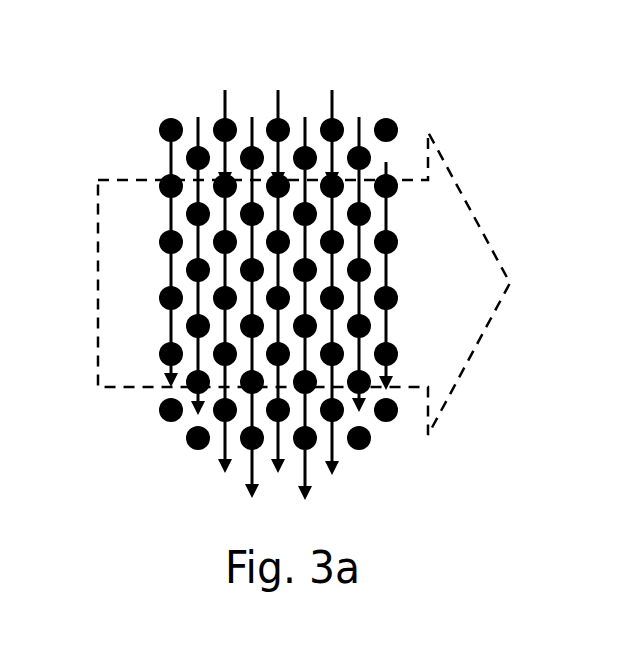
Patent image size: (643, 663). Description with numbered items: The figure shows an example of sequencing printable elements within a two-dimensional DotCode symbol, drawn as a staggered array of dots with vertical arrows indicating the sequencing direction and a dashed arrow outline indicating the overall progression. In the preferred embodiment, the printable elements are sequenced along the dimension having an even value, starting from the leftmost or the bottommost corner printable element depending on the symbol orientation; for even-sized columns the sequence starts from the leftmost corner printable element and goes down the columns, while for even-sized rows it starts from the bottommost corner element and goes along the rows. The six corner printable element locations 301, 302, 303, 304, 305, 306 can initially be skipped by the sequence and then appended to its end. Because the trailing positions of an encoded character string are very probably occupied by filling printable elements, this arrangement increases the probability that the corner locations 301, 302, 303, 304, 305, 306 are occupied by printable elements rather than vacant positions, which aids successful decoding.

The corner printable element location 301 is at (397, 423).
The corner printable element location 302 is at (157, 418).
The corner printable element location 303 is at (365, 453).
The corner printable element location 304 is at (190, 448).
The corner printable element location 305 is at (400, 113).
The corner printable element location 306 is at (163, 112).